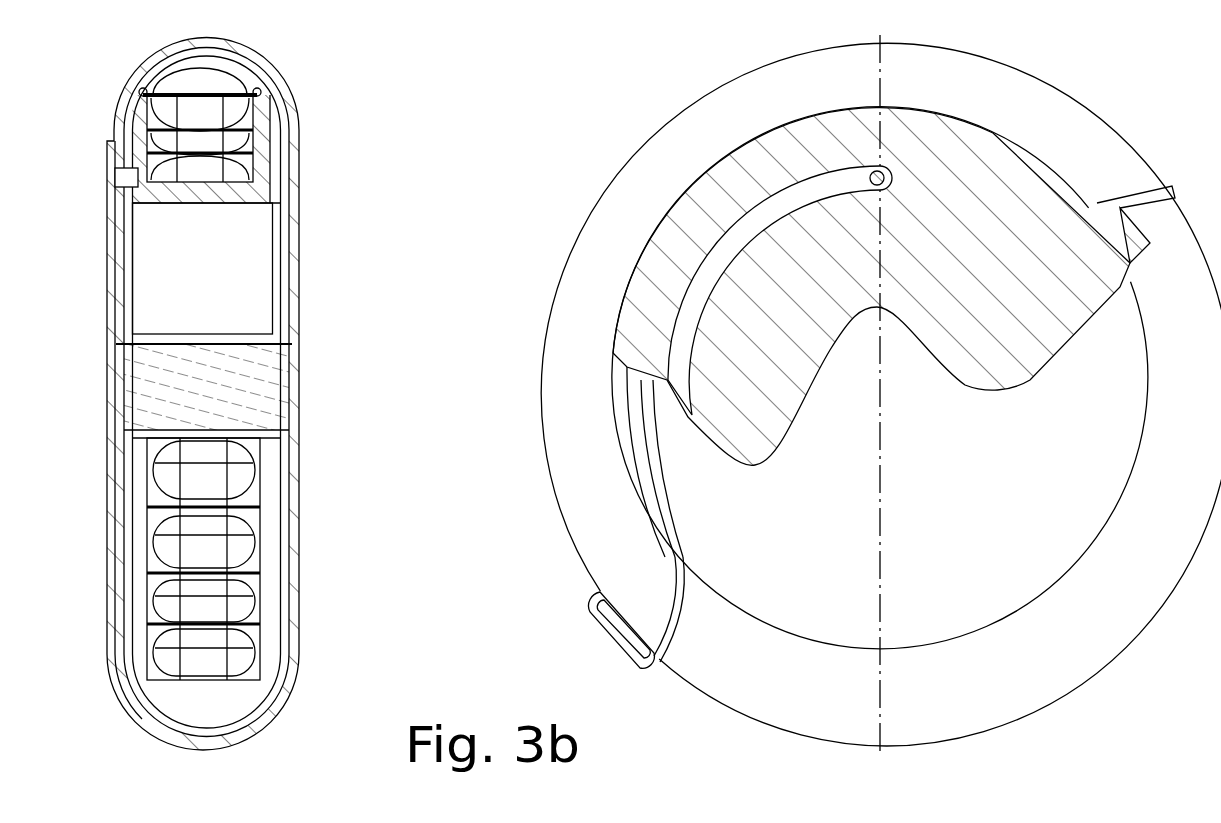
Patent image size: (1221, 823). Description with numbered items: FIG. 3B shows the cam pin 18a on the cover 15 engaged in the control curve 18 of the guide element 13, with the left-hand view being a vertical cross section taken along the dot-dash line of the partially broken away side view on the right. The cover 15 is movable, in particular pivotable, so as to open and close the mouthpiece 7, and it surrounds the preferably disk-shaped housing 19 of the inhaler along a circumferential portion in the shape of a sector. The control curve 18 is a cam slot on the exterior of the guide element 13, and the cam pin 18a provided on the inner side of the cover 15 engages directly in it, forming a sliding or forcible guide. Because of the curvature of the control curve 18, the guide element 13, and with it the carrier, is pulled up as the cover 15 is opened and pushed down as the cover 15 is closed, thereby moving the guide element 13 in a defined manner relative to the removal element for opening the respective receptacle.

The mouthpiece 7 is at (628, 160).
The guide element 13 is at (257, 116).
The cover 15 is at (858, 480).
The control curve 18 is at (822, 183).
The cam pin 18a is at (112, 175).
The housing 19 is at (570, 325).